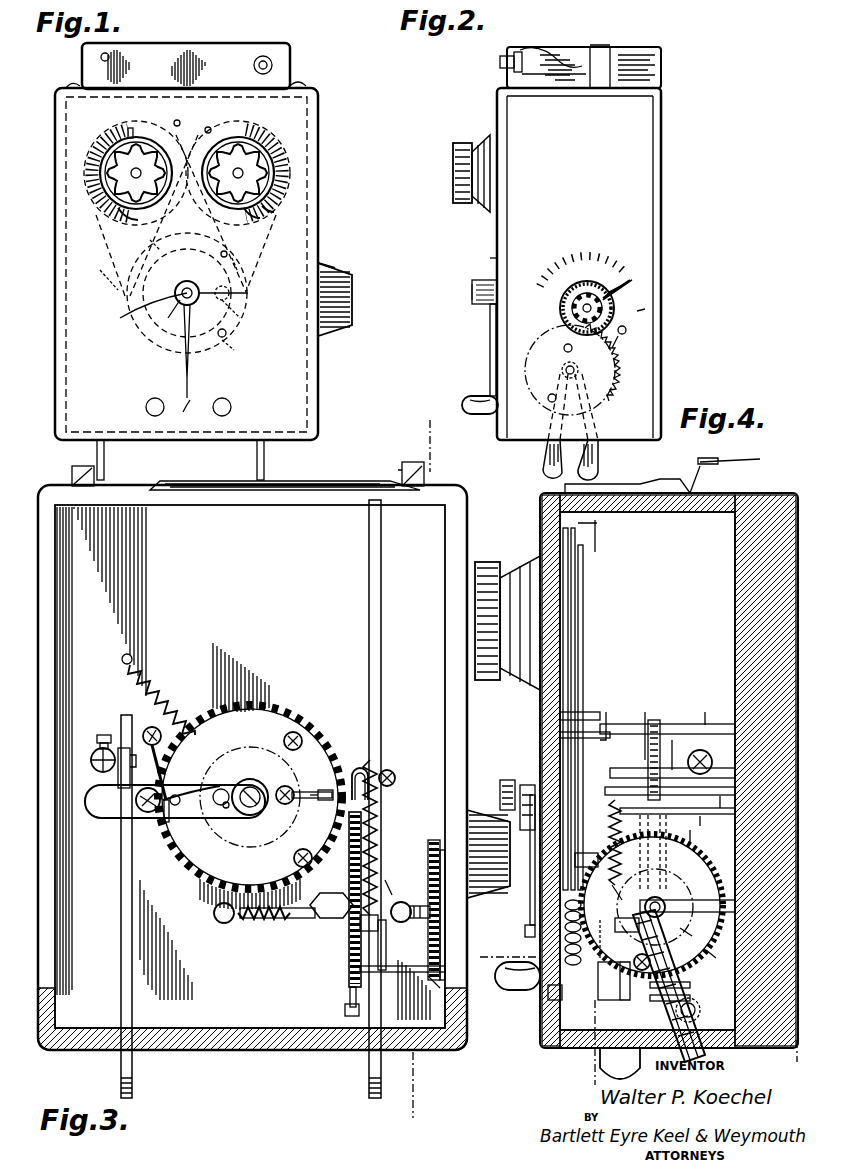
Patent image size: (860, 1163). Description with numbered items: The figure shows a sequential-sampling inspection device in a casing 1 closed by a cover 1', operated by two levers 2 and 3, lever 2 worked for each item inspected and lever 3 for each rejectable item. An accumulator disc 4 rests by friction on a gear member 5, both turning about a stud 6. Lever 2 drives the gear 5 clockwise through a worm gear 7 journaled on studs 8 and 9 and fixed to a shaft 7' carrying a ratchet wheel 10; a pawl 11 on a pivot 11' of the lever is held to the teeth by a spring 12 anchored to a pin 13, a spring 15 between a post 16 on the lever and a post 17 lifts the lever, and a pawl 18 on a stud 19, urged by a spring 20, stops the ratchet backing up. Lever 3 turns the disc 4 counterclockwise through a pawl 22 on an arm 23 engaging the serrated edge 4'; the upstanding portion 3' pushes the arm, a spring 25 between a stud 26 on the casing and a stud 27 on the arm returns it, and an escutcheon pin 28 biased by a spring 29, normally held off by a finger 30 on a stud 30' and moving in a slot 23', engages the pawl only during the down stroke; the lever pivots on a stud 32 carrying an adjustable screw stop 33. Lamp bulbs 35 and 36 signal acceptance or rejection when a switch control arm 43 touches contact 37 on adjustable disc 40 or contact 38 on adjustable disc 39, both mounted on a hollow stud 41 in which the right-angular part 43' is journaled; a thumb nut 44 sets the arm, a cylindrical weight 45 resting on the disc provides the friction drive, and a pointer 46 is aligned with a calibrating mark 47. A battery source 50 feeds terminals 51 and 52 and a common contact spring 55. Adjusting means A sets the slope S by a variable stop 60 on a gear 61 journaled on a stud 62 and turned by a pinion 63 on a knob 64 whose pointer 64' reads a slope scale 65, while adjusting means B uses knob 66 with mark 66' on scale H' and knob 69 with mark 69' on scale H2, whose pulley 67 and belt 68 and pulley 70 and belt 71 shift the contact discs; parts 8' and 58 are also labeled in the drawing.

In FIG. 1, the casing 1 is at (200, 264).
In FIG. 2, the casing 1 is at (597, 264).
In FIG. 3, the casing 1 is at (252, 765).
In FIG. 4, the casing 1 is at (669, 754).
In FIG. 1, the cover 1' is at (206, 264).
In FIG. 2, the cover 1' is at (472, 254).
In FIG. 1, the lever 2 is at (257, 458).
In FIG. 2, the lever 2 is at (599, 462).
In FIG. 3, the lever 2 is at (369, 1068).
In FIG. 4, the lever 2 is at (745, 1051).
In FIG. 1, the lever 3 is at (122, 460).
In FIG. 2, the lever 3 is at (539, 426).
In FIG. 3, the lever 3 is at (147, 906).
In FIG. 4, the lever 3 is at (580, 802).
In FIG. 3, the upstanding portion 3' is at (127, 744).
In FIG. 4, the upstanding portion 3' is at (676, 735).
In FIG. 2, the accumulator disc 4 is at (445, 446).
In FIG. 3, the accumulator disc 4 is at (360, 903).
In FIG. 4, the accumulator disc 4 is at (653, 786).
In FIG. 3, the serrated edge 4' is at (169, 875).
In FIG. 3, the gear member 5 is at (210, 713).
In FIG. 4, the gear member 5 is at (670, 716).
In FIG. 3, the stud 6 is at (250, 821).
In FIG. 3, the worm gear 7 is at (264, 938).
In FIG. 4, the worm gear 7 is at (634, 970).
In FIG. 2, the shaft 7' is at (557, 367).
In FIG. 3, the shaft 7' is at (277, 923).
In FIG. 4, the shaft 7' is at (687, 907).
In FIG. 2, the stud 8 is at (625, 350).
In FIG. 3, the stud 8 is at (178, 921).
In FIG. 3, the lever 8' is at (394, 873).
In FIG. 4, the lever 8' is at (669, 986).
In FIG. 3, the stud 9 is at (90, 790).
In FIG. 4, the stud 9 is at (716, 958).
In FIG. 3, the ratchet wheel 10 is at (348, 975).
In FIG. 4, the ratchet wheel 10 is at (616, 974).
In FIG. 3, the pawl 11 is at (327, 997).
In FIG. 4, the pawl 11 is at (690, 1000).
In FIG. 3, the pivot 11' is at (329, 1011).
In FIG. 4, the pivot 11' is at (705, 1010).
In FIG. 3, the spring 12 is at (386, 946).
In FIG. 4, the spring 12 is at (697, 935).
In FIG. 3, the pin 13 is at (390, 972).
In FIG. 4, the pin 13 is at (690, 985).
In FIG. 3, the spring 15 is at (384, 856).
In FIG. 4, the spring 15 is at (612, 920).
In FIG. 3, the stud or post 16 is at (378, 925).
In FIG. 4, the stud or post 16 is at (615, 926).
In FIG. 3, the post or stud 17 is at (388, 770).
In FIG. 4, the post or stud 17 is at (700, 750).
In FIG. 4, the pawl 18 is at (700, 842).
In FIG. 3, the stud 19 is at (325, 812).
In FIG. 4, the stud 19 is at (704, 826).
In FIG. 3, the spring 20 is at (362, 772).
In FIG. 4, the spring 20 is at (712, 785).
In FIG. 3, the pawl 22 is at (140, 808).
In FIG. 3, the arm 23 is at (170, 815).
In FIG. 3, the slot 23' is at (156, 835).
In FIG. 3, the spring 25 is at (151, 674).
In FIG. 3, the stud 26 is at (131, 656).
In FIG. 3, the stud 27 is at (232, 782).
In FIG. 3, the escutcheon pin 28 is at (180, 806).
In FIG. 3, the spring 29 is at (232, 810).
In FIG. 3, the finger 30 is at (195, 772).
In FIG. 4, the finger 30 is at (649, 775).
In FIG. 3, the stud 30' is at (144, 731).
In FIG. 4, the stud 30' is at (716, 699).
In FIG. 3, the stud 32 is at (88, 748).
In FIG. 4, the stud 32 is at (716, 750).
In FIG. 3, the adjustable screw stop 33 is at (106, 733).
In FIG. 1, the lamp bulb 35 is at (158, 395).
In FIG. 1, the lamp bulb 36 is at (226, 402).
In FIG. 2, the lamp bulb 36 is at (470, 402).
In FIG. 4, the lamp bulb 36 is at (510, 990).
In FIG. 1, the contact 37 is at (236, 346).
In FIG. 3, the contact 37 is at (292, 706).
In FIG. 4, the contact 37 is at (606, 712).
In FIG. 3, the contact 38 is at (294, 860).
In FIG. 4, the contact 38 is at (611, 843).
In FIG. 1, the adjustable disc 39 is at (242, 320).
In FIG. 4, the adjustable disc 39 is at (560, 718).
In FIG. 1, the adjustable disc 40 is at (228, 336).
In FIG. 4, the adjustable disc 40 is at (560, 738).
In FIG. 4, the hollow stud 41 is at (527, 785).
In FIG. 1, the switch control arm 43 is at (187, 293).
In FIG. 3, the switch control arm 43 is at (299, 783).
In FIG. 1, the right-angular part 43' is at (166, 315).
In FIG. 1, the adjusting thumb nut 44 is at (142, 306).
In FIG. 2, the adjusting thumb nut 44 is at (472, 290).
In FIG. 4, the adjusting thumb nut 44 is at (505, 780).
In FIG. 1, the cylindrical weight 45 is at (240, 305).
In FIG. 3, the cylindrical weight 45 is at (318, 790).
In FIG. 4, the cylindrical weight 45 is at (648, 900).
In FIG. 1, the pointer 46 is at (182, 372).
In FIG. 2, the pointer 46 is at (490, 344).
In FIG. 4, the pointer 46 is at (530, 907).
In FIG. 1, the gauge or scale mark 47 is at (200, 396).
In FIG. 1, the battery source 50 is at (238, 54).
In FIG. 2, the battery source 50 is at (636, 55).
In FIG. 3, the terminal 51 is at (70, 478).
In FIG. 2, the terminal 52 is at (507, 83).
In FIG. 3, the terminal 52 is at (425, 477).
In FIG. 4, the terminal 52 is at (565, 488).
In FIG. 4, the common contact spring 55 is at (548, 1003).
In FIG. 1, the pin 58 is at (236, 262).
In FIG. 2, the variable stop 60 is at (529, 418).
In FIG. 3, the variable stop 60 is at (430, 974).
In FIG. 4, the variable stop 60 is at (630, 955).
In FIG. 2, the gear 61 is at (610, 389).
In FIG. 3, the gear 61 is at (441, 940).
In FIG. 4, the gear 61 is at (525, 935).
In FIG. 3, the stud 62 is at (424, 900).
In FIG. 2, the small pinion 63 is at (563, 303).
In FIG. 3, the small pinion 63 is at (434, 838).
In FIG. 1, the exterior adjusting knob 64 is at (348, 299).
In FIG. 2, the exterior adjusting knob 64 is at (567, 308).
In FIG. 4, the exterior adjusting knob 64 is at (488, 831).
In FIG. 1, the pointer 64' is at (349, 261).
In FIG. 2, the pointer 64' is at (608, 282).
In FIG. 2, the slope scale 65 is at (571, 236).
In FIG. 1, the adjustable knob 66 is at (99, 176).
In FIG. 1, the indicating mark 66' is at (139, 248).
In FIG. 1, the pulley 67 is at (183, 140).
In FIG. 4, the pulley 67 is at (570, 571).
In FIG. 1, the belt or cord 68 is at (112, 278).
In FIG. 1, the adjusting knob 69 is at (269, 177).
In FIG. 2, the adjusting knob 69 is at (457, 173).
In FIG. 4, the adjusting knob 69 is at (507, 615).
In FIG. 1, the indicating mark 69' is at (301, 202).
In FIG. 1, the pulley 70 is at (250, 134).
In FIG. 4, the pulley 70 is at (577, 600).
In FIG. 1, the belt or cord 71 is at (240, 275).
In FIG. 4, the belt or cord 71 is at (583, 612).
In FIG. 2, the adjusting means A is at (640, 257).
In FIG. 1, the adjusting means B is at (74, 193).
In FIG. 1, the H1 scale H' is at (80, 221).
In FIG. 1, the H2 scale H2 is at (262, 212).
In FIG. 2, the slope S is at (590, 360).